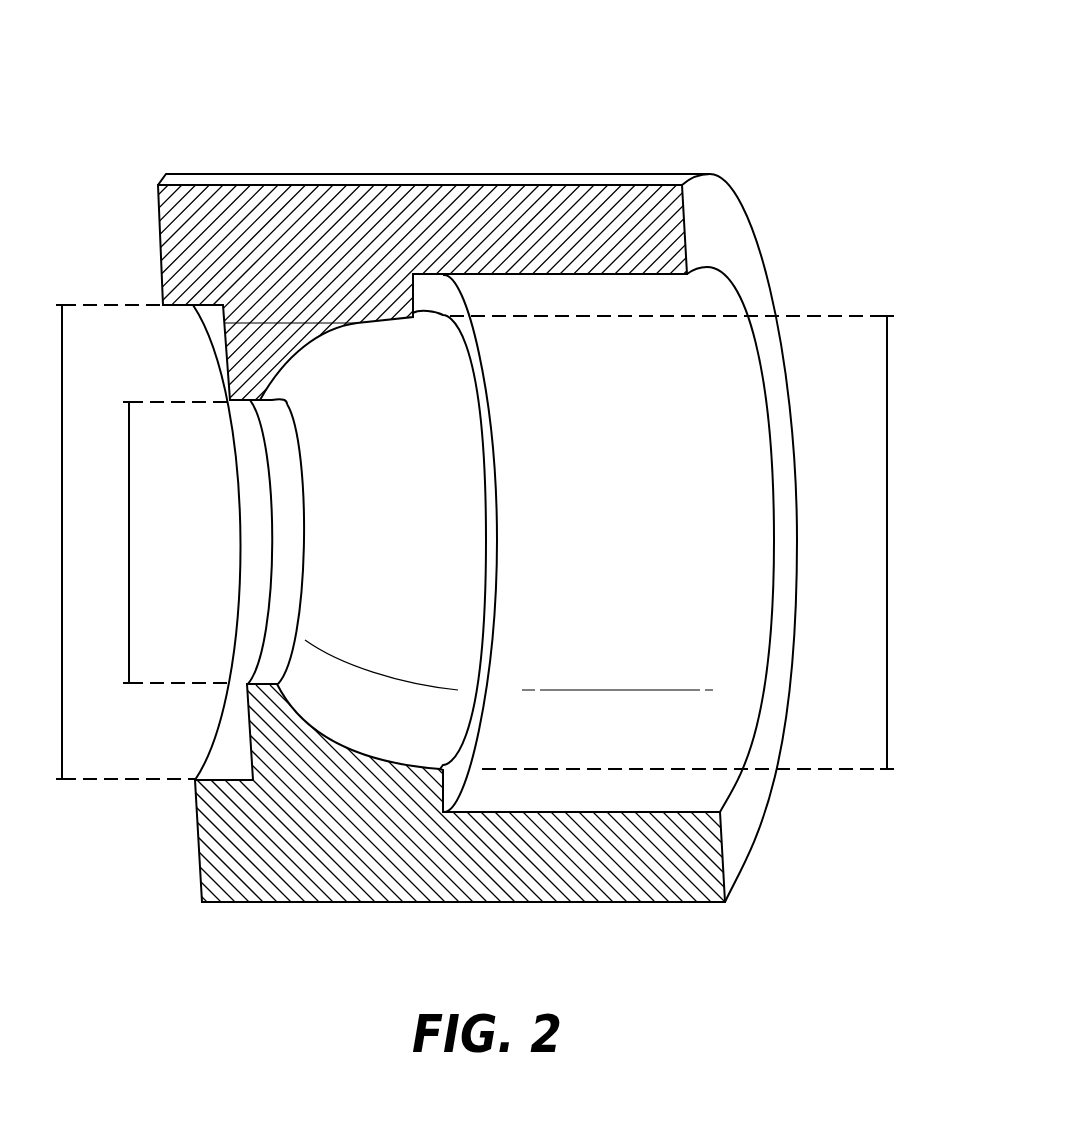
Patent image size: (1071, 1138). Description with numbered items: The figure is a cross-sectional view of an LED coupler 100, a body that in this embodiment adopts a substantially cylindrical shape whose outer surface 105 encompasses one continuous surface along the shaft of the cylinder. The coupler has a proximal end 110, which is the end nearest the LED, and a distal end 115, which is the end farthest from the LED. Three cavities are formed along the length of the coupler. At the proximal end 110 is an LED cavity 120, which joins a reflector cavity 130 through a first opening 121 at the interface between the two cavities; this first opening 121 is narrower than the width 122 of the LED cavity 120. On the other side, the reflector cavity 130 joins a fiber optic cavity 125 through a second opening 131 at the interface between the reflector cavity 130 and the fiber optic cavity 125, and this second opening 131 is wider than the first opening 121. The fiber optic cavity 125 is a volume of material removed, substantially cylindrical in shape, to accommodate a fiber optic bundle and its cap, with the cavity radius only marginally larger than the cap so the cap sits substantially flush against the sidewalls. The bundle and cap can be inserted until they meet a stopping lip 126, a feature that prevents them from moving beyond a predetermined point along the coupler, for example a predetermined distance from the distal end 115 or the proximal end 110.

The LED coupler 100 is at (184, 71).
The outer surface 105 is at (582, 180).
The proximal end 110 is at (160, 222).
The distal end 115 is at (725, 210).
The LED cavity 120 is at (255, 516).
The first opening 121 is at (161, 542).
The width of the LED cavity 122 is at (129, 542).
The fiber optic cavity 125 is at (645, 523).
The stopping lip 126 is at (432, 295).
The reflector cavity 130 is at (353, 602).
The second opening 131 is at (692, 542).